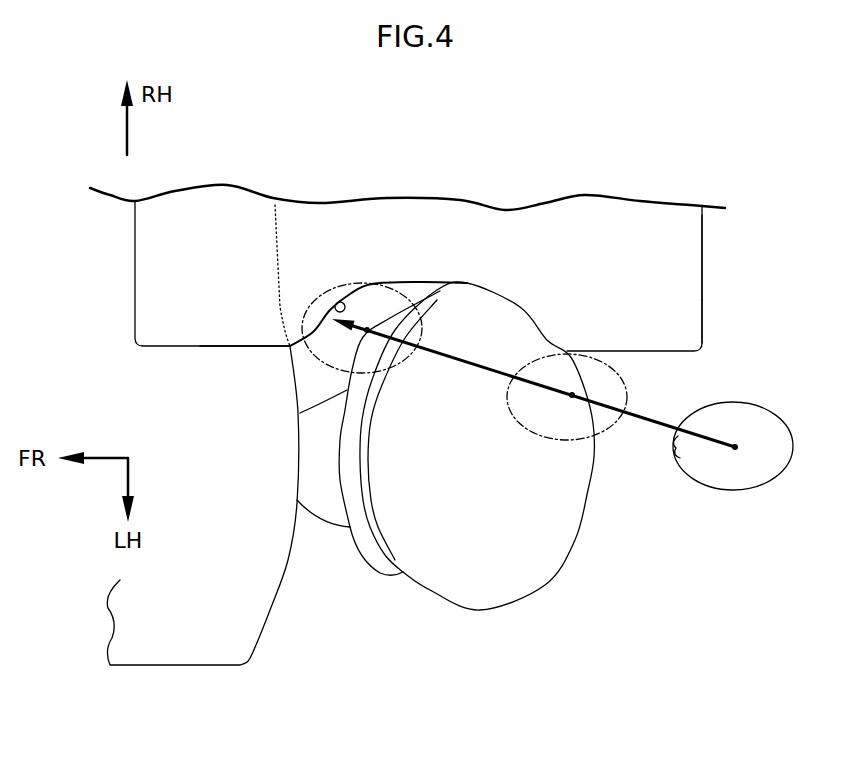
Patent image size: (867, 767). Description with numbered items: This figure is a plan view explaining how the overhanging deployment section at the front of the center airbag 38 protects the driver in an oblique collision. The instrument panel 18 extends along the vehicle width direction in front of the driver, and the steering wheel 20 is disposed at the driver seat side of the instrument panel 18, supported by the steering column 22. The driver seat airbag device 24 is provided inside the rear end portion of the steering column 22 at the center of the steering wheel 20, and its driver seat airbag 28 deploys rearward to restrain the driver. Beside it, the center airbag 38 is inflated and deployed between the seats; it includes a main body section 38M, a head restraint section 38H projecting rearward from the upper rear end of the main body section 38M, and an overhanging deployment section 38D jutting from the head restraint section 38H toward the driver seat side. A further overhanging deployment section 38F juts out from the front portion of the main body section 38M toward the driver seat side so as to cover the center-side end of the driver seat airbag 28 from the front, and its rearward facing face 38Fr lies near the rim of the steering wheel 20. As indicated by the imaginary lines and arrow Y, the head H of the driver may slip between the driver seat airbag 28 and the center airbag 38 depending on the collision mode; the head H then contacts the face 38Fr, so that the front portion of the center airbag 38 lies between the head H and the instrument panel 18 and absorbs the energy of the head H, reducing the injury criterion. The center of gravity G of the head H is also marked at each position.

The instrument panel 18 is at (215, 655).
The steering wheel 20 is at (385, 575).
The steering column 22 is at (317, 510).
The driver seat airbag device 24 is at (497, 600).
The driver seat airbag 28 is at (477, 491).
The center airbag 38 is at (200, 356).
The overhanging deployment section 38F is at (240, 340).
The rearward facing face 38Fr is at (338, 302).
The main body section 38M is at (466, 218).
The head restraint section 38H is at (685, 248).
The overhanging deployment section 38D is at (690, 344).
The center of gravity of head G is at (542, 391).
The head H is at (395, 360).
The arrow Y is at (465, 355).